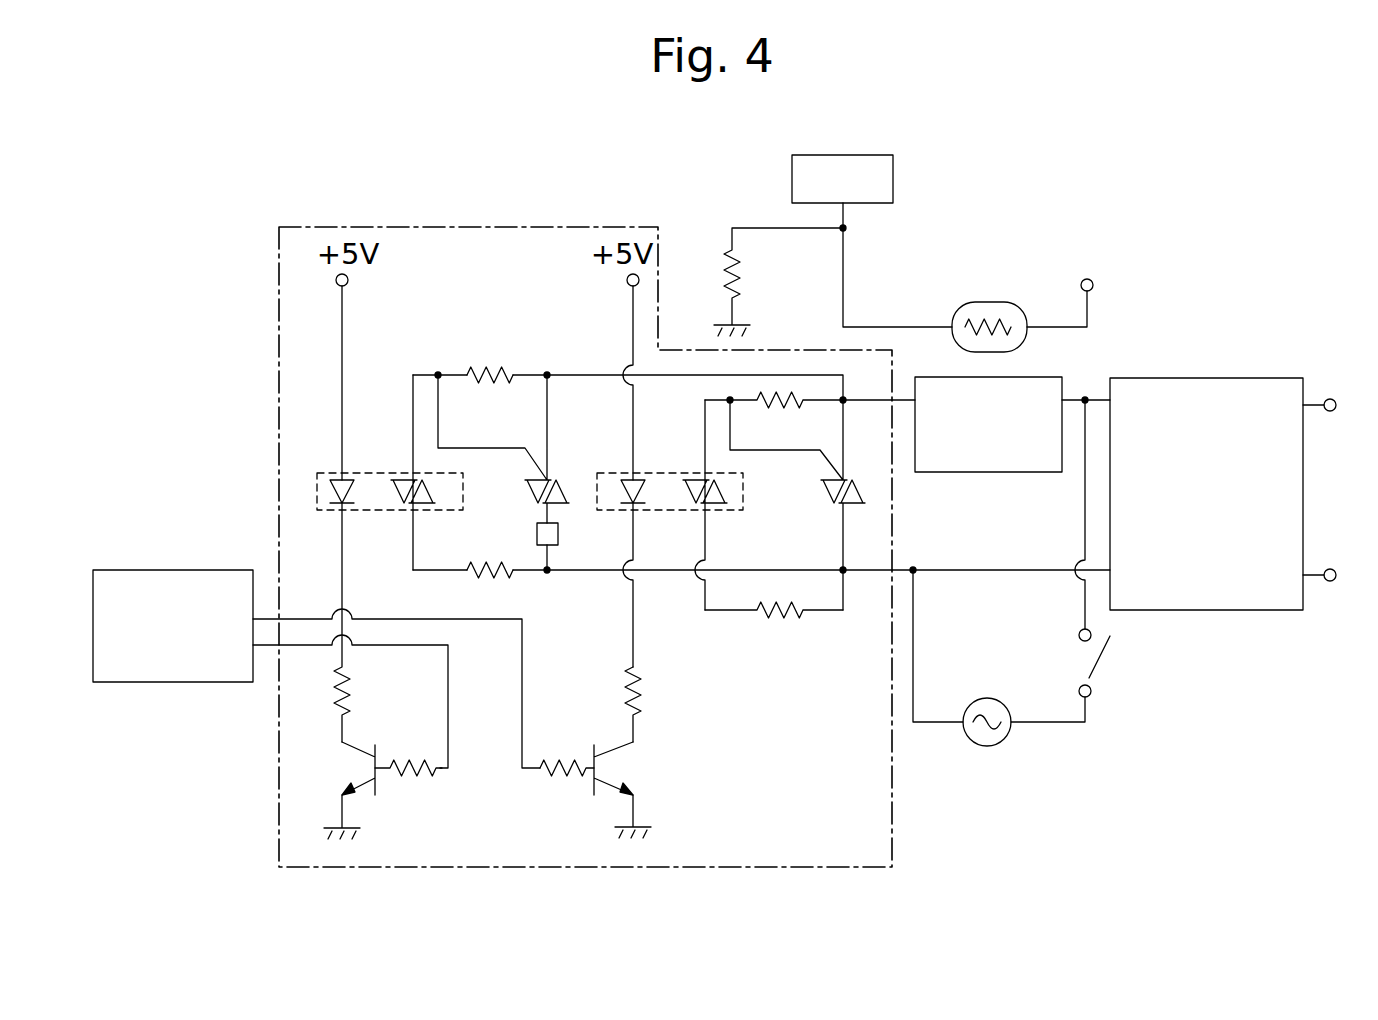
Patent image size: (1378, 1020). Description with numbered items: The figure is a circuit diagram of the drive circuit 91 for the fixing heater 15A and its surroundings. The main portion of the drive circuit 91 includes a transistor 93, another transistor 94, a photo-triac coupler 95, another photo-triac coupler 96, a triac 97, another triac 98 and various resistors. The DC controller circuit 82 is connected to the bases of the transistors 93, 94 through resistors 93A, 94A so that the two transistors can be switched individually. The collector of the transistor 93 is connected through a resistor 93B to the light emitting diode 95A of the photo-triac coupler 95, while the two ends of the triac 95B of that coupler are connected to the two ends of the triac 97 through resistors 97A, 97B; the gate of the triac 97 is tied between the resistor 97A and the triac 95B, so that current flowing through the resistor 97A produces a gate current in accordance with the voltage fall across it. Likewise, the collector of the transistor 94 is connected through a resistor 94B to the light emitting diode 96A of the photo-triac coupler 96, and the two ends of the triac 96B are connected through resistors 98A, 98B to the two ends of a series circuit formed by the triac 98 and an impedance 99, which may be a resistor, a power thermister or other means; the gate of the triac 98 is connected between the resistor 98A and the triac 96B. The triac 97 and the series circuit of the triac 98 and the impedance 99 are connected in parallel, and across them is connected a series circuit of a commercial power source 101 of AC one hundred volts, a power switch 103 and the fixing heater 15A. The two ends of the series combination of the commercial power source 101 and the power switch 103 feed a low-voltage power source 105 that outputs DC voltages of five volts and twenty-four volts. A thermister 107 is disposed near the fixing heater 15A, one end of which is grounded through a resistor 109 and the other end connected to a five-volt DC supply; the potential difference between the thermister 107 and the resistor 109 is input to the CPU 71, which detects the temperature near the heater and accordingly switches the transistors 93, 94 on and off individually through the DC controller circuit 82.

The fixing heater 15A is at (1044, 377).
The CPU 71 is at (792, 160).
The DC controller circuit 82 is at (224, 570).
The drive circuit 91 is at (896, 793).
The transistor 93 is at (592, 794).
The resistor 93A is at (568, 759).
The resistor 93B is at (620, 690).
The transistor 94 is at (376, 798).
The resistor 94A is at (392, 759).
The resistor 94B is at (352, 690).
The photo-triac coupler 95 is at (685, 533).
The light emitting diode 95A is at (637, 507).
The triac 95B is at (712, 507).
The photo-triac coupler 96 is at (372, 472).
The light emitting diode 96A is at (332, 497).
The triac 96B is at (404, 507).
The triac 97 is at (851, 507).
The resistor 97A is at (781, 404).
The resistor 97B is at (779, 617).
The triac 98 is at (556, 480).
The resistor 98A is at (497, 386).
The resistor 98B is at (482, 549).
The impedance 99 is at (558, 534).
The commercial power source 101 is at (990, 698).
The power switch 103 is at (1098, 666).
The low-voltage power source 105 is at (1166, 378).
The thermister 107 is at (989, 302).
The resistor 109 is at (748, 272).